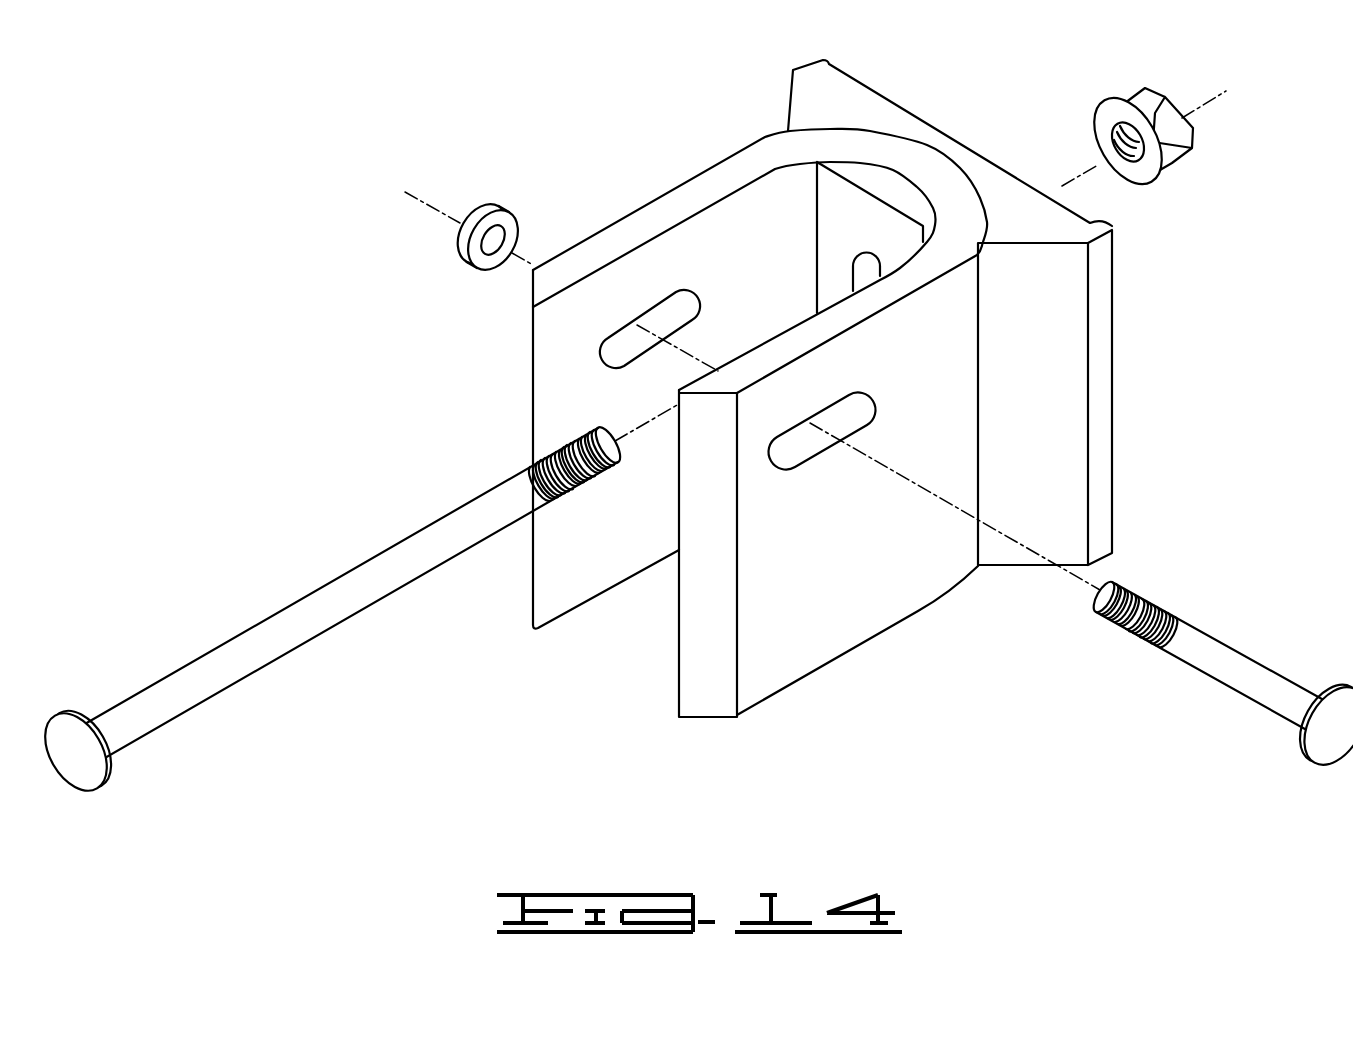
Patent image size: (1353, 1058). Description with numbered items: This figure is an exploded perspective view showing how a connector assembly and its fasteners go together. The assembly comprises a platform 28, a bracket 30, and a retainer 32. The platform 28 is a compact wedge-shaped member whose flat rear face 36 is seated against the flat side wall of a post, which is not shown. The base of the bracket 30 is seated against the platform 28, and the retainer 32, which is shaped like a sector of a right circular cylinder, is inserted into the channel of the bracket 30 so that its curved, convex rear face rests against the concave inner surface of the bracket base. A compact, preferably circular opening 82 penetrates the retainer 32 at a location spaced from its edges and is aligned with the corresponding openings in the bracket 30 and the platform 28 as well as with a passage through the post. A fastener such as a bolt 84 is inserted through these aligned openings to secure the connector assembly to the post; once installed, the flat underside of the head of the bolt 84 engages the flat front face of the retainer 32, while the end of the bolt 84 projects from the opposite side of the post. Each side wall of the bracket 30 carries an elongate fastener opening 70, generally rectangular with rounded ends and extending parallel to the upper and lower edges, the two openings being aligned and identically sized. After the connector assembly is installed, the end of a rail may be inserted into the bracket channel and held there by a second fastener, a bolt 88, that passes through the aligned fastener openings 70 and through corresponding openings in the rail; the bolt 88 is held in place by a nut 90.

The platform 28 is at (1112, 382).
The bracket 30 is at (848, 662).
The retainer 32 is at (897, 194).
The rear face 36 is at (866, 83).
The fastener opening 70 is at (602, 356).
The opening 82 is at (862, 270).
The bolt 84 is at (210, 660).
The bolt 88 is at (1246, 656).
The nut 90 is at (462, 244).